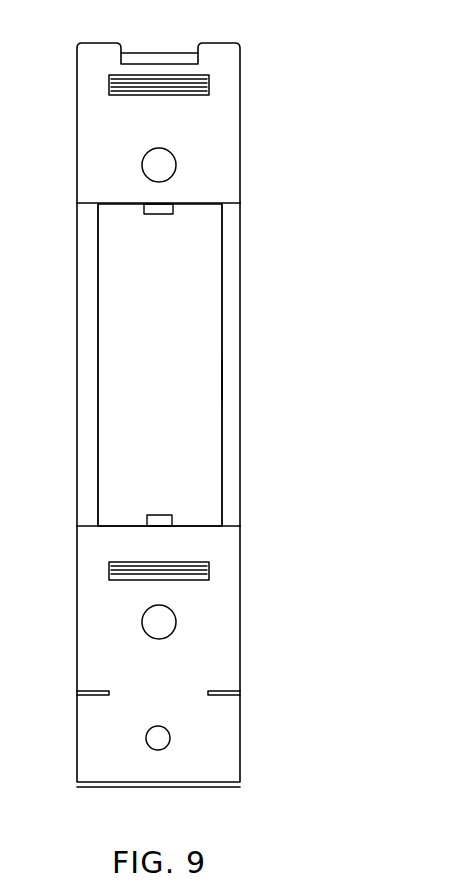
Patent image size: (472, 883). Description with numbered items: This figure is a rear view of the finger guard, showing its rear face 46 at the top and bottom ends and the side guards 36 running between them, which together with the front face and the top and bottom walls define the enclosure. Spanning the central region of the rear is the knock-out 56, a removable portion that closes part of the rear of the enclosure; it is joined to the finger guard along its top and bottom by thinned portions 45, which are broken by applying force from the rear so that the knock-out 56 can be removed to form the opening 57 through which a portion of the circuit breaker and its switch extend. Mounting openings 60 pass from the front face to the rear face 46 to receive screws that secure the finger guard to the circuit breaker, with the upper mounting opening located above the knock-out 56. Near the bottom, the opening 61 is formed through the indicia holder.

The side guards 36 is at (87, 344).
The thinned portions 45 is at (98, 204).
The rear face 46 is at (128, 137).
The knock-out 56 is at (192, 443).
The opening 57 is at (230, 378).
The mounting openings 60 is at (167, 167).
The opening 61 is at (162, 738).